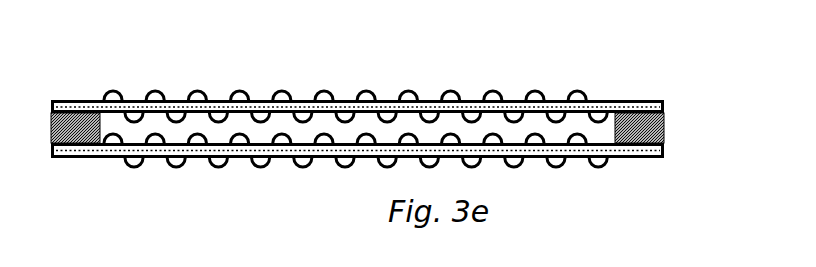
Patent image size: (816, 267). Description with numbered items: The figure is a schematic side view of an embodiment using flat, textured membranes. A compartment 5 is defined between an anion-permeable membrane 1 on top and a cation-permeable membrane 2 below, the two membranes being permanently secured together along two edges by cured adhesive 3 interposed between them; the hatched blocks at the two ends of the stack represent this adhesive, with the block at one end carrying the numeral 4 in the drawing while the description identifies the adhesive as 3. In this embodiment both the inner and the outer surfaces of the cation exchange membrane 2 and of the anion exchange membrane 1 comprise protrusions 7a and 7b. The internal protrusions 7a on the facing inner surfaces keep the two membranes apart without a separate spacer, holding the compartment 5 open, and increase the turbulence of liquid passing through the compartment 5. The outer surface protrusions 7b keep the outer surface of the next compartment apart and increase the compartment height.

The anion-permeable membrane 1 is at (210, 112).
The cation-permeable membrane 2 is at (135, 147).
The cured adhesive 3 is at (655, 122).
The left spacer block 4 is at (57, 135).
The compartment 5 is at (404, 124).
The internal protrusions 7a is at (597, 124).
The outer surface protrusions 7b is at (118, 92).